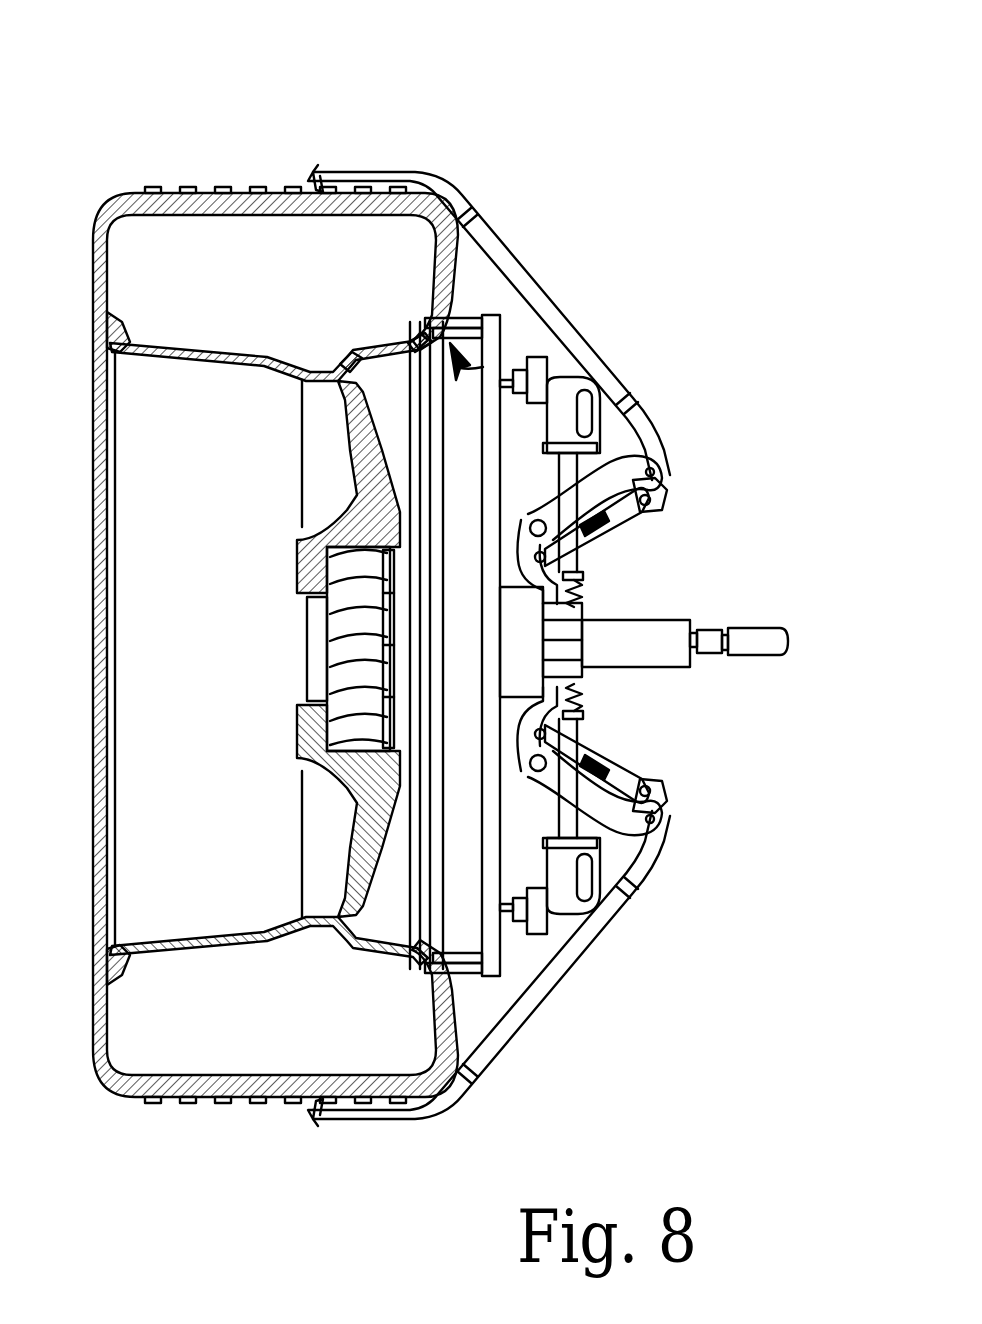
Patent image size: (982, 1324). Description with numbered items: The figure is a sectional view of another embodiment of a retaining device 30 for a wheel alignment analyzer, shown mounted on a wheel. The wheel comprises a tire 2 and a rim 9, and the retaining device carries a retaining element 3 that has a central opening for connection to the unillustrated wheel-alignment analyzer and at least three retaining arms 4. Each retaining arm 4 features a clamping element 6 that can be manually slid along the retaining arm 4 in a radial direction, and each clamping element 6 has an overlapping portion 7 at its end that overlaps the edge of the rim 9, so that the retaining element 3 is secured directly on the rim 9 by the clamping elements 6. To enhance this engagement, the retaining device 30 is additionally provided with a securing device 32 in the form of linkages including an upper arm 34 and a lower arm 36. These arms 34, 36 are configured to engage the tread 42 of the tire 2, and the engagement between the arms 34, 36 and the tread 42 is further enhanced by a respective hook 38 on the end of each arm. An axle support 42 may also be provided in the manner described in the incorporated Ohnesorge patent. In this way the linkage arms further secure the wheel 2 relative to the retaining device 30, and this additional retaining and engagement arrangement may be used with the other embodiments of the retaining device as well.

The tire 2 is at (100, 180).
The retaining element 3 is at (468, 815).
The retaining arm 4 is at (493, 943).
The clamping element 6 is at (496, 327).
The overlapping portion 7 is at (413, 337).
The rim 9 is at (328, 322).
The retaining device 30 is at (757, 298).
The securing device 32 is at (690, 462).
The upper arm 34 is at (483, 230).
The lower arm 36 is at (600, 930).
The hook 38 is at (313, 177).
The tread 42 is at (210, 193).